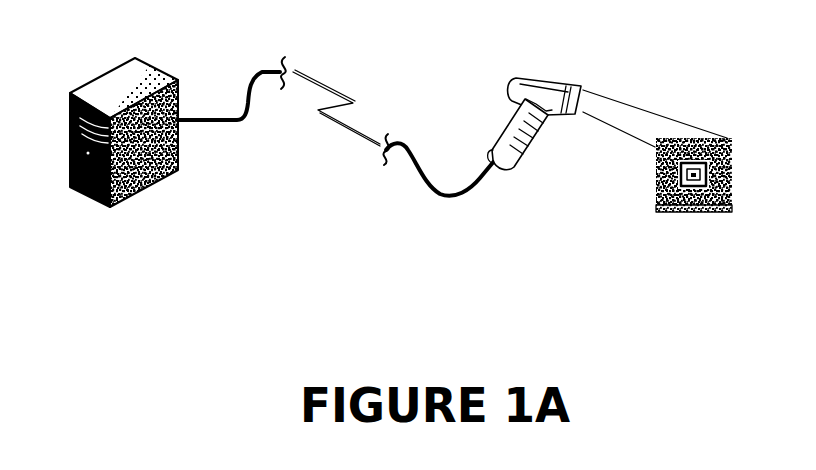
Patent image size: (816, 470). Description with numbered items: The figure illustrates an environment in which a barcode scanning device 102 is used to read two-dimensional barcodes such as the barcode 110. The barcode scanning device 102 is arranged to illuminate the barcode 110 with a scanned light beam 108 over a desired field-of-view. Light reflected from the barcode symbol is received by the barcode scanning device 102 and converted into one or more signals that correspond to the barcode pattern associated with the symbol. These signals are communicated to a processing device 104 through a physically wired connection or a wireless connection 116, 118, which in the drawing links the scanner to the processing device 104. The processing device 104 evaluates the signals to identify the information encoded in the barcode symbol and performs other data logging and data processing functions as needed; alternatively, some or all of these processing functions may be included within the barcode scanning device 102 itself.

The barcode scanning device 102 is at (505, 122).
The processing device 104 is at (82, 198).
The scanned light beam 108 is at (644, 105).
The barcode 110 is at (680, 207).
The wired or wireless connection 116 is at (248, 88).
The wired or wireless connection 118 is at (428, 197).